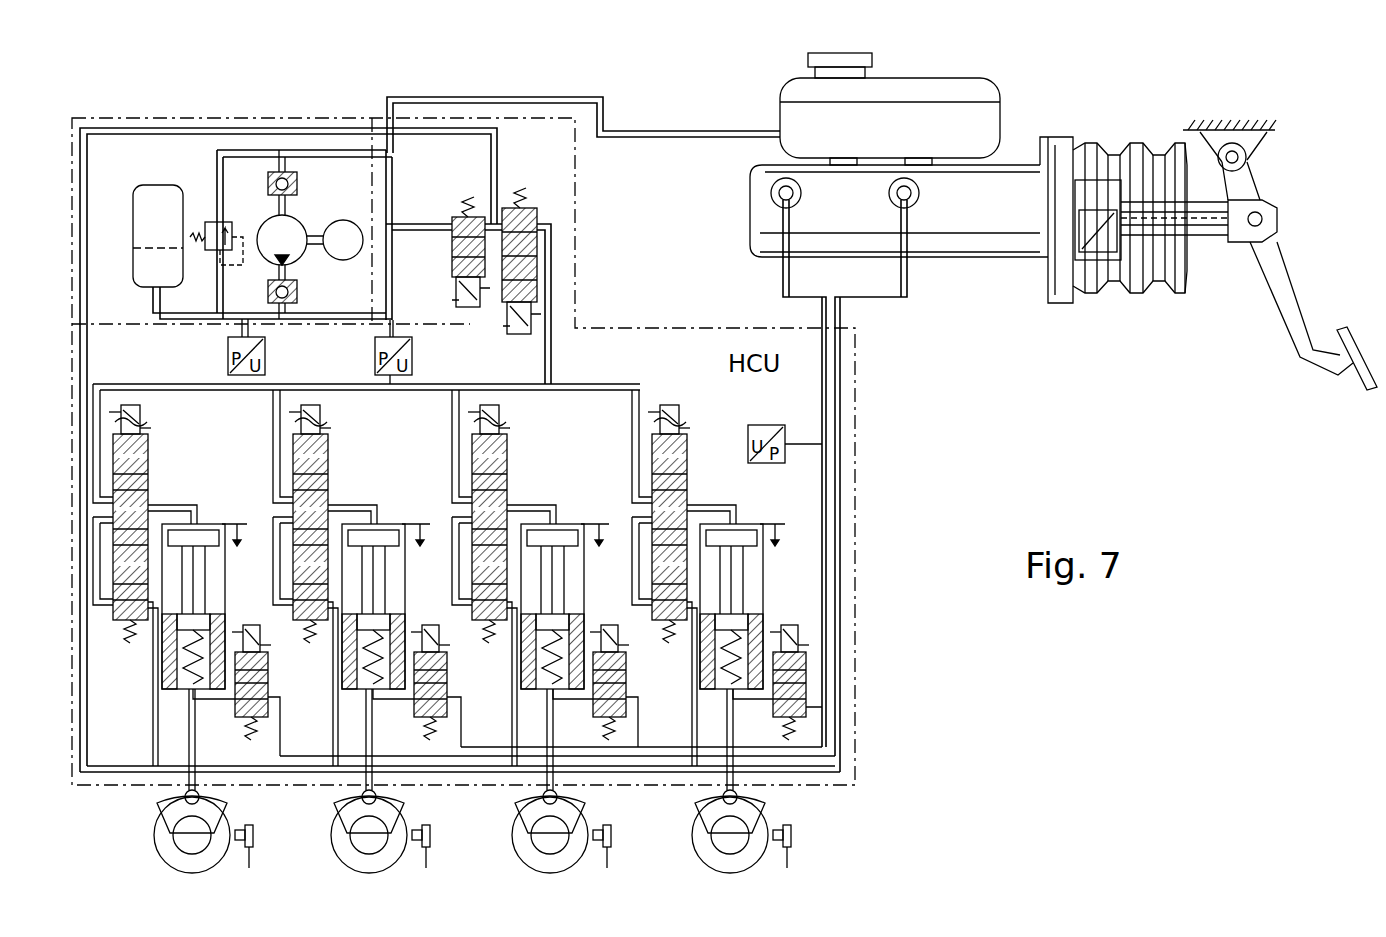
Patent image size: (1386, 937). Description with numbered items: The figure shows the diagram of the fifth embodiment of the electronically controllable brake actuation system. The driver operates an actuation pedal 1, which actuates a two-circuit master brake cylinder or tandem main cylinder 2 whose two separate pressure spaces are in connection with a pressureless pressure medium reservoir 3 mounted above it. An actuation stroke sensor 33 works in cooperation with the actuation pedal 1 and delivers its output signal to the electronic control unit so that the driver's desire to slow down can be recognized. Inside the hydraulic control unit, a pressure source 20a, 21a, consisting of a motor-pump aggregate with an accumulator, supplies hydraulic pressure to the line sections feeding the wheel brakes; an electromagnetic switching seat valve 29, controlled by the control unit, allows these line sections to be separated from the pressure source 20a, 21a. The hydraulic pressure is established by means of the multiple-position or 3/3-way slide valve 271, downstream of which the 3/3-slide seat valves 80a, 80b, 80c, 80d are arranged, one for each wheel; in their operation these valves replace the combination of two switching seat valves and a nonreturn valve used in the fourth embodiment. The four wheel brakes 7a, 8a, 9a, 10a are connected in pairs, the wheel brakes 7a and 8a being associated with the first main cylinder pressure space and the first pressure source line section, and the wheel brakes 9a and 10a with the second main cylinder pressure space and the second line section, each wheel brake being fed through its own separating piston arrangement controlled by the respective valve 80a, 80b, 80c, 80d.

The actuation pedal 1 is at (1282, 282).
The tandem main cylinder 2 is at (970, 242).
The pressure medium reservoir 3 is at (975, 127).
The actuation stroke sensor 33 is at (1100, 275).
The pressure source 21a is at (155, 197).
The pressure source 20a is at (316, 222).
The electromagnetic valve 29 is at (452, 217).
The 3/3-way slide valve 271 is at (537, 262).
The 3/3-slide seat valve 80a is at (510, 470).
The 3/3-slide seat valve 80b is at (148, 470).
The 3/3-slide seat valve 80c is at (688, 490).
The 3/3-slide seat valve 80d is at (330, 470).
The wheel brake 7a is at (573, 805).
The wheel brake 8a is at (215, 805).
The wheel brake 9a is at (752, 805).
The wheel brake 10a is at (392, 805).